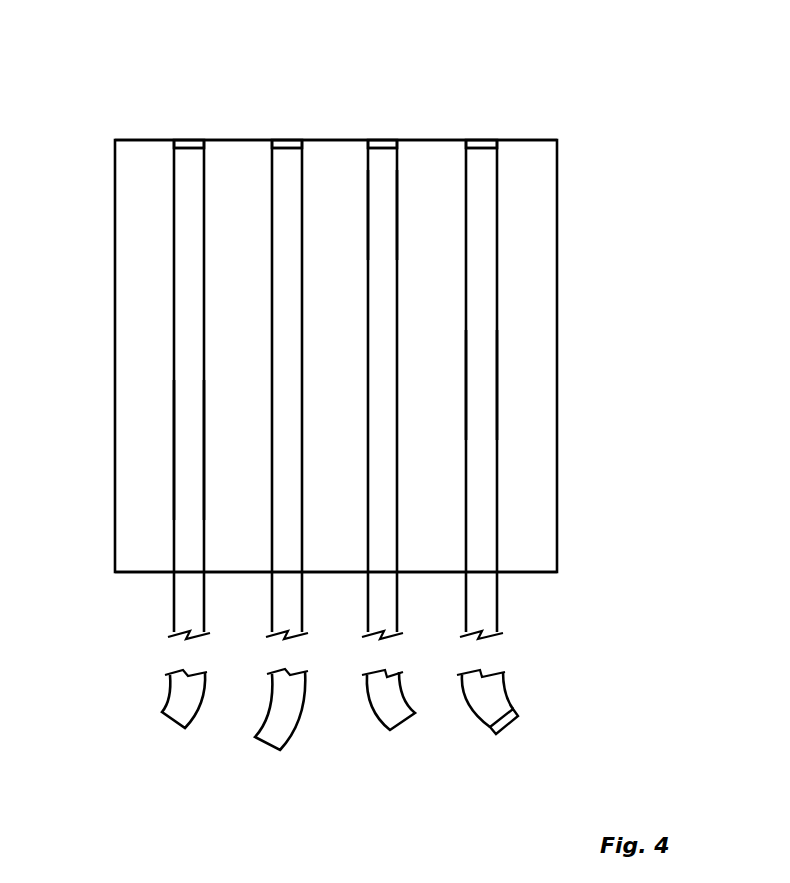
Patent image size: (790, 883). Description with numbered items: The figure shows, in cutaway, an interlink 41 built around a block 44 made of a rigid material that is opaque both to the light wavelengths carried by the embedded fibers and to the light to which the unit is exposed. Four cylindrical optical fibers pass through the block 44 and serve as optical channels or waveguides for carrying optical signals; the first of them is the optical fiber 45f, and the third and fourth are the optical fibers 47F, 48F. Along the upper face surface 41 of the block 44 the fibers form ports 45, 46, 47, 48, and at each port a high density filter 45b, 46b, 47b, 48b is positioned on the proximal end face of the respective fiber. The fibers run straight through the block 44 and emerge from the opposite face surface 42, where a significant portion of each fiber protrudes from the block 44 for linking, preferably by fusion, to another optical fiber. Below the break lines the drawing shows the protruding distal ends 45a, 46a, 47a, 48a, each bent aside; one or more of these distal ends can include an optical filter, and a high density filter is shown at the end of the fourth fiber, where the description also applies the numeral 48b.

The face surface 41 is at (545, 137).
The face surface 42 is at (540, 573).
The block 44 is at (140, 329).
The port 45 is at (195, 130).
The distal end 45a is at (170, 723).
The filter 45b is at (190, 137).
The optical fiber 45f is at (182, 452).
The port 46 is at (283, 133).
The distal end 46a is at (270, 747).
The filter 46b is at (292, 138).
The port 47 is at (383, 133).
The distal end 47a is at (407, 723).
The filter 47b is at (387, 138).
The optical fiber 47F is at (382, 192).
The port 48 is at (482, 133).
The distal end 48a is at (510, 732).
The filter 48b is at (488, 138).
The optical fiber 48F is at (482, 397).